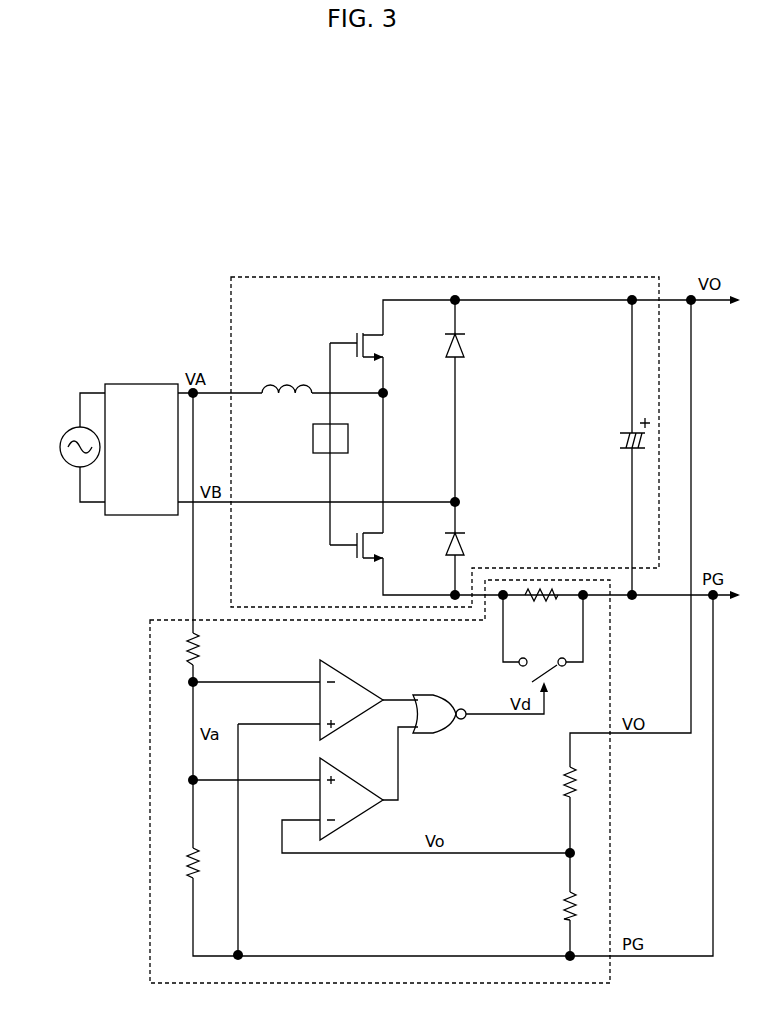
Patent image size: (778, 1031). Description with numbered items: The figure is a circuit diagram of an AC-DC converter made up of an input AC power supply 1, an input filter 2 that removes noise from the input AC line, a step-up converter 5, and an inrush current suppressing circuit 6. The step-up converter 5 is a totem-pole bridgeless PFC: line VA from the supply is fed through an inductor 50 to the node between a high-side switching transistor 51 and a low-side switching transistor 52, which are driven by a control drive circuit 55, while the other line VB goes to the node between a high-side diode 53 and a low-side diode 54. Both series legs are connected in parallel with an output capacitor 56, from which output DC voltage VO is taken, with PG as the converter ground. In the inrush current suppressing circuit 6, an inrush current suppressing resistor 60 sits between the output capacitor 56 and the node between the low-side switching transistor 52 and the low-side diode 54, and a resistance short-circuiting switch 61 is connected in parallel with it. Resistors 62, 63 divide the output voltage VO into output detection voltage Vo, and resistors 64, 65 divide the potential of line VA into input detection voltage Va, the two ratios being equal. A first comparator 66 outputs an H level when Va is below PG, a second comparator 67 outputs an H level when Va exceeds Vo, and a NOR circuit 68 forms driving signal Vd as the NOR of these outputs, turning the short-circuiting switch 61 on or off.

The input AC power supply 1 is at (62, 440).
The input filter 2 is at (140, 384).
The step-up converter 5 is at (227, 292).
The inrush current suppressing circuit 6 is at (148, 642).
The inductor 50 is at (284, 384).
The high-side switching transistor 51 is at (378, 343).
The low-side switching transistor 52 is at (378, 543).
The high-side diode 53 is at (465, 340).
The low-side diode 54 is at (465, 543).
The control drive circuit 55 is at (313, 432).
The output capacitor 56 is at (620, 443).
The inrush current suppressing resistor 60 is at (548, 602).
The resistance short-circuiting switch 61 is at (556, 676).
The resistor 62 is at (562, 790).
The resistor 63 is at (562, 913).
The resistor 64 is at (185, 658).
The resistor 65 is at (185, 874).
The first comparator 66 is at (356, 679).
The second comparator 67 is at (338, 781).
The NOR circuit 68 is at (439, 733).